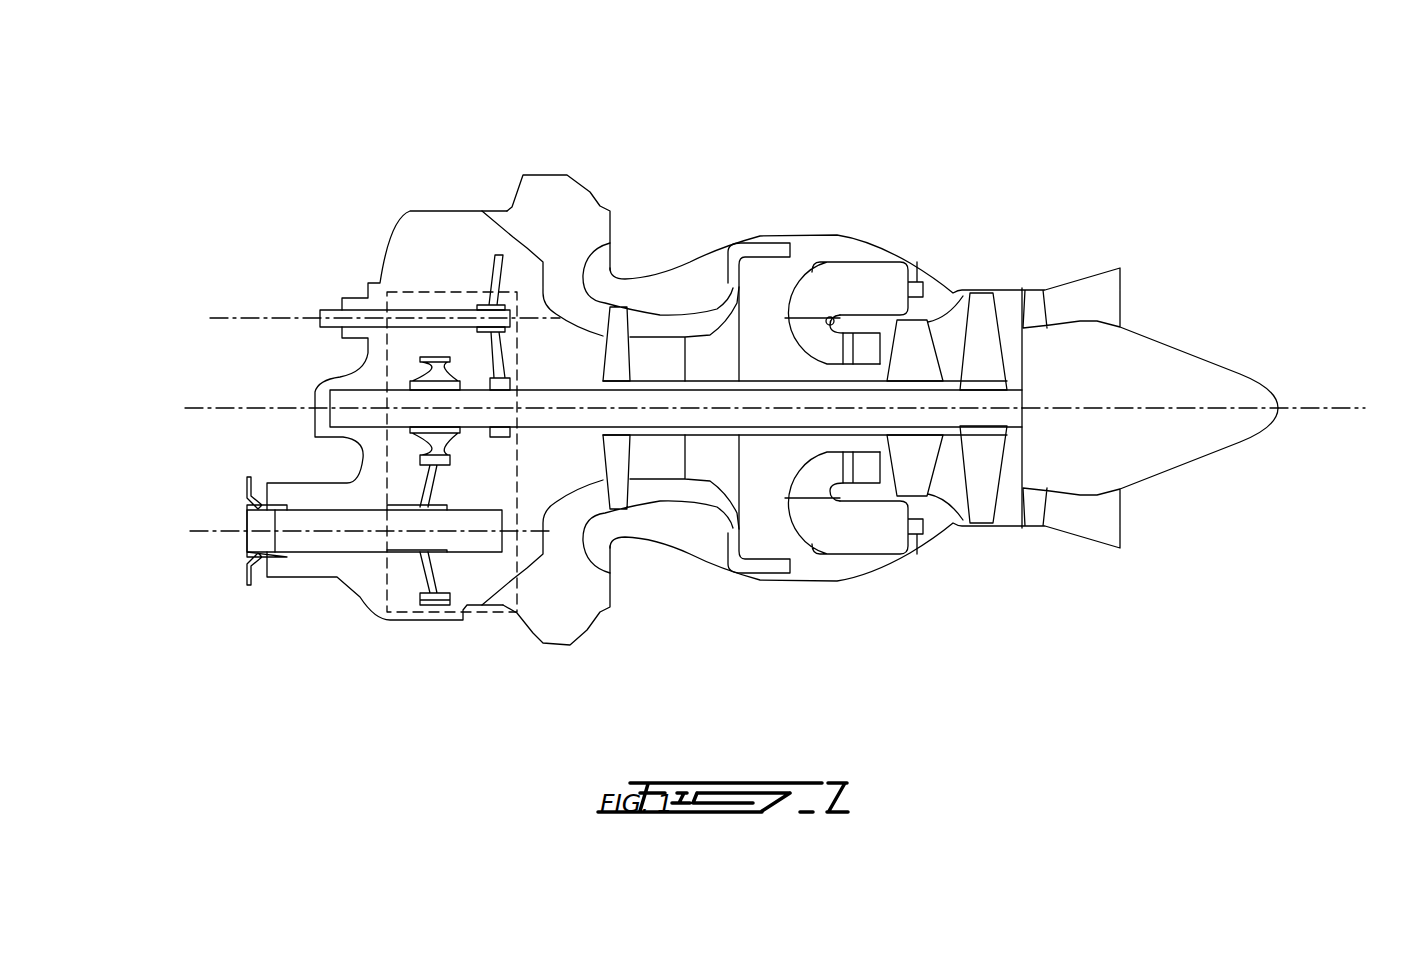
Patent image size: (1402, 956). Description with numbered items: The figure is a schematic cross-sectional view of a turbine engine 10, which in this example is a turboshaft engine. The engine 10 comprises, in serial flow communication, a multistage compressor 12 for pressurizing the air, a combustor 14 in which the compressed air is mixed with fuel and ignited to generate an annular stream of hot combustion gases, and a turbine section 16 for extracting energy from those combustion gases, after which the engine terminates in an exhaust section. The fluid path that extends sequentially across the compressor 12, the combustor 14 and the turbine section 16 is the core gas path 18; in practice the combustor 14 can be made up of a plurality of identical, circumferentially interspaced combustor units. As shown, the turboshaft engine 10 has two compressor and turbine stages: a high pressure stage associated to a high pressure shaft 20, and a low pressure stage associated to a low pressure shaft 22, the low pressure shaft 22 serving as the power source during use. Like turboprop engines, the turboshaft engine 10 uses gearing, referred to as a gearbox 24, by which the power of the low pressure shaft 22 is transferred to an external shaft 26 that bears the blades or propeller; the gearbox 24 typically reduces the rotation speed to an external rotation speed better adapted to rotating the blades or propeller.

The turbine engine 10 is at (1084, 186).
The multistage compressor 12 is at (678, 294).
The combustor 14 is at (873, 252).
The turbine section 16 is at (957, 292).
The core gas path 18 is at (771, 242).
The high pressure shaft 20 is at (845, 356).
The low pressure shaft 22 is at (831, 318).
The gearbox 24 is at (437, 292).
The external shaft 26 is at (297, 495).